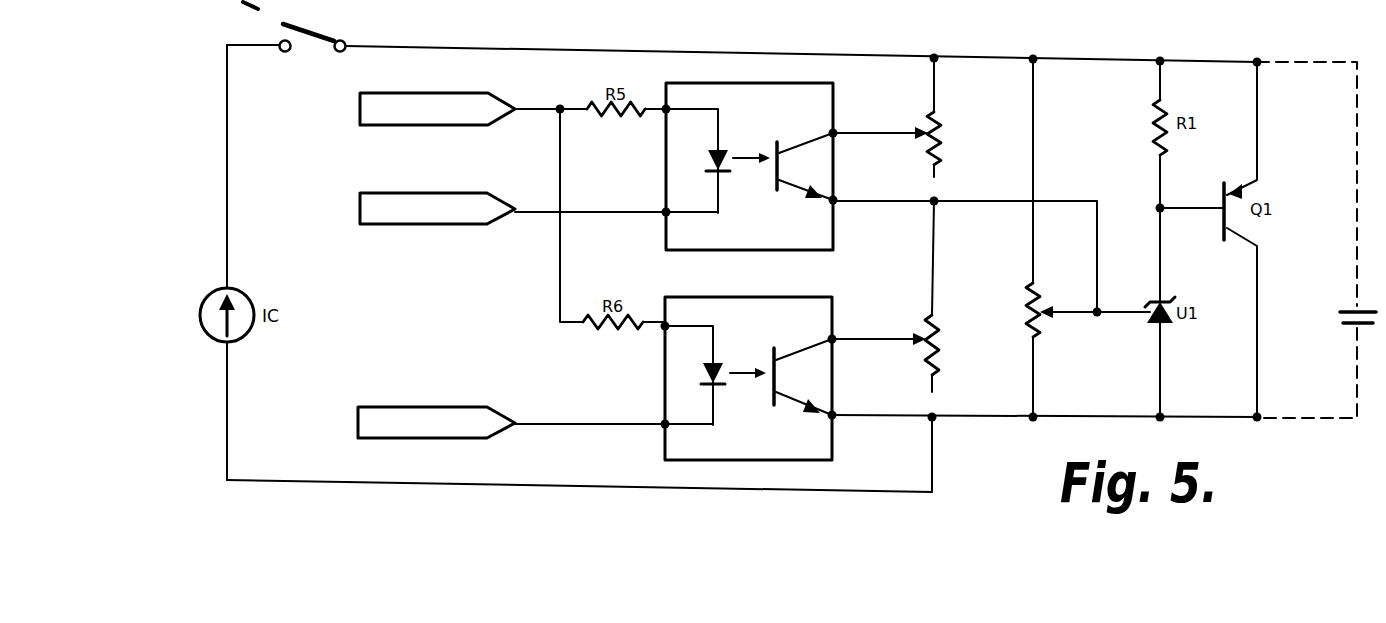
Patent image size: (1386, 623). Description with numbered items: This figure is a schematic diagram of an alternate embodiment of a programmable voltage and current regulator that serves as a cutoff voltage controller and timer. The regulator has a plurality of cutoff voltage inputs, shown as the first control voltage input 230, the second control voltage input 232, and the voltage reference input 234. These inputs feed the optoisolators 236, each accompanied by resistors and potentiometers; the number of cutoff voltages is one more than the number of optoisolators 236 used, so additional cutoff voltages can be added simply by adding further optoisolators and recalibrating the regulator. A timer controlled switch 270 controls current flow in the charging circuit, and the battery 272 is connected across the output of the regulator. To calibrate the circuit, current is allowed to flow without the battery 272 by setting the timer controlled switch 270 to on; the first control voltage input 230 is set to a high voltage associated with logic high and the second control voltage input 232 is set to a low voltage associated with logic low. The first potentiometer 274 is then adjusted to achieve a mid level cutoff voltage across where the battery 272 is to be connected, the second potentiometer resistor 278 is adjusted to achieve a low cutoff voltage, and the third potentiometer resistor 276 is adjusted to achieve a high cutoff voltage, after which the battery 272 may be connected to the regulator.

The timer controlled switch S11 270 is at (330, 36).
The voltage reference input Vcc1 234 is at (445, 127).
The Control 1 voltage input 230 is at (445, 225).
The Control 2 voltage input 232 is at (437, 407).
The optoisolator U60 236 is at (838, 94).
The potentiometer resistor R3 278 is at (940, 112).
The variable resistor R4 276 is at (928, 315).
The potentiometer R2 274 is at (1030, 283).
The battery B11 272 is at (1345, 305).